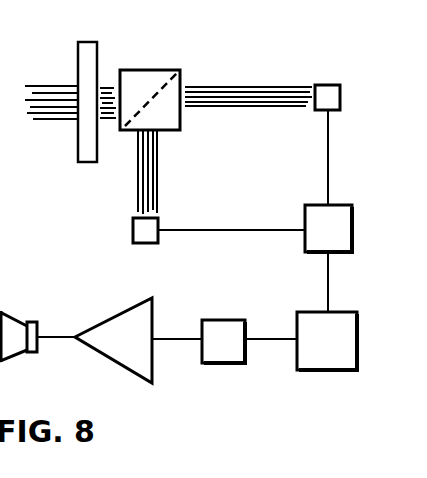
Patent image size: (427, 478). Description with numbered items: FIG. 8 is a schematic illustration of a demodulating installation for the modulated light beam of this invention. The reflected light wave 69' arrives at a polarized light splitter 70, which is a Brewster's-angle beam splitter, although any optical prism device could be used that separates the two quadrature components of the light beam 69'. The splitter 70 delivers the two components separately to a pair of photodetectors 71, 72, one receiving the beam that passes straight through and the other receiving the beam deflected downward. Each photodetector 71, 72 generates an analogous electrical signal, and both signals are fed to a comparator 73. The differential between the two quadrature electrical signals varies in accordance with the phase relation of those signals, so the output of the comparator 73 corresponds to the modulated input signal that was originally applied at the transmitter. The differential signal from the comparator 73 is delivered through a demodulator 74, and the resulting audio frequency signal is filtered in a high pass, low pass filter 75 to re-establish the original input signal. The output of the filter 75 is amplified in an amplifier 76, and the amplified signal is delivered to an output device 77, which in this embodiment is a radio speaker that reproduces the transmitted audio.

The reflected light wave 69' is at (168, 119).
The polarized light splitter 70 is at (137, 70).
The photodetector 71 is at (328, 85).
The photodetector 72 is at (133, 230).
The comparator 73 is at (308, 238).
The demodulator 74 is at (299, 362).
The high pass, low pass filter 75 is at (222, 320).
The amplifier 76 is at (115, 318).
The output device 77 is at (32, 352).